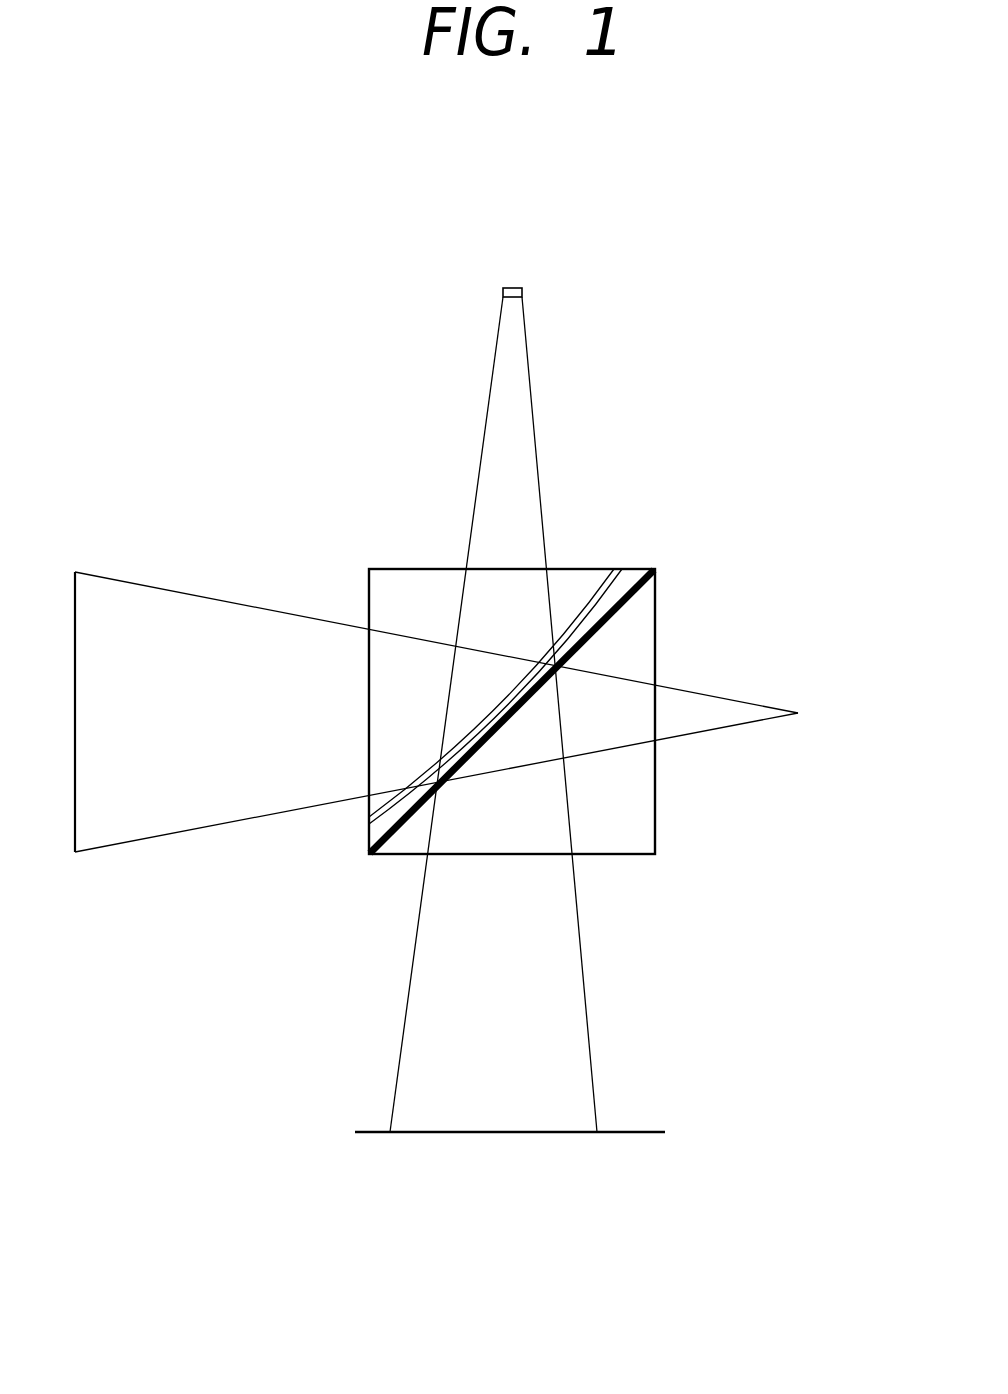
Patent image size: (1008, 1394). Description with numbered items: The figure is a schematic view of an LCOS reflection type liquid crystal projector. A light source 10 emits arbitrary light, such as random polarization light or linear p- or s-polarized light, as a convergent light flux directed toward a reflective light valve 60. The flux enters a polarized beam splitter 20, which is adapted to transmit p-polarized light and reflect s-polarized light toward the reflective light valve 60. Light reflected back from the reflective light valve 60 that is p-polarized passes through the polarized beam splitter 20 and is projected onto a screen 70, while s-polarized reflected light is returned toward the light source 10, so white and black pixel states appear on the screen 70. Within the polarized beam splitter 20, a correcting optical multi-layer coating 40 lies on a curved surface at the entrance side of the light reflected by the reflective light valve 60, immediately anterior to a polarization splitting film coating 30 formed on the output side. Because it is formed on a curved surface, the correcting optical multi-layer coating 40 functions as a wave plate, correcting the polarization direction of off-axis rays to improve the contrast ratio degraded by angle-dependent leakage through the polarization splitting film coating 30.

The light source 10 is at (76, 853).
The polarized beam splitter 20 is at (656, 841).
The polarization splitting film coating 30 is at (656, 576).
The correcting optical multi-layer coating 40 is at (621, 568).
The reflective light valve 60 is at (510, 286).
The screen 70 is at (627, 1133).